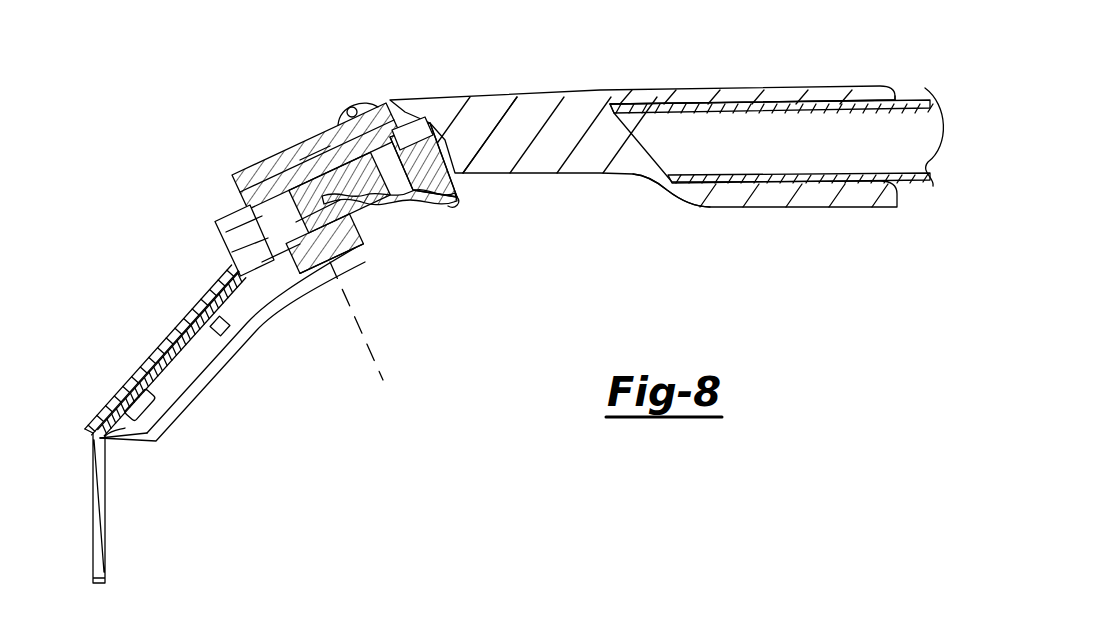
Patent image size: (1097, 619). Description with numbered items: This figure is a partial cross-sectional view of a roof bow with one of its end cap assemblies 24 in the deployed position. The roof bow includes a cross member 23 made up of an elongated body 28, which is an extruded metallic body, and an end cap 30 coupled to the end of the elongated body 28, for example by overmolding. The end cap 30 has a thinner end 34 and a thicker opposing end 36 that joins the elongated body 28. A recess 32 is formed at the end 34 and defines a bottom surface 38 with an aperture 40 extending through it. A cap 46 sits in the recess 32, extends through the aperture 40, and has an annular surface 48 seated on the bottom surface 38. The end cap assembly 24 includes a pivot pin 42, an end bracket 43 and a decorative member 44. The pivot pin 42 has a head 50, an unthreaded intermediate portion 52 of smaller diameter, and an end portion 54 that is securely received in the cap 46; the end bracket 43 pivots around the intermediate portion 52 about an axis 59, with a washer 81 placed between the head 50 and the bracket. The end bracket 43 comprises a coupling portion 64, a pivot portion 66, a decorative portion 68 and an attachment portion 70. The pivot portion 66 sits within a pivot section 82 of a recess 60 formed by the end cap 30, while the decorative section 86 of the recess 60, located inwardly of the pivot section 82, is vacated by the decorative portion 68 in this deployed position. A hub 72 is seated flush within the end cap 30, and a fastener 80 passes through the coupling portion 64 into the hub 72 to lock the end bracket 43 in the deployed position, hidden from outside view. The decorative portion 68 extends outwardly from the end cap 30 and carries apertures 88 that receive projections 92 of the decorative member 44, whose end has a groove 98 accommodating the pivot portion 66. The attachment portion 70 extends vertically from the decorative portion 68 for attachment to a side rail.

The cross member 23 is at (802, 75).
The end cap assembly 24 is at (255, 350).
The elongated body 28 is at (900, 183).
The end cap 30 is at (652, 88).
The recess 32 is at (352, 118).
The end 34 is at (220, 203).
The end 36 is at (858, 86).
The bottom surface 38 is at (253, 160).
The aperture 40 is at (282, 195).
The pivot pin 42 is at (367, 247).
The end bracket 43 is at (168, 372).
The decorative member 44 is at (173, 327).
The cap 46 is at (318, 160).
The annular surface 48 is at (394, 125).
The head 50 is at (345, 252).
The intermediate portion 52 is at (336, 215).
The end portion 54 is at (305, 245).
The axis 59 is at (383, 385).
The recess 60 is at (531, 188).
The coupling portion 64 is at (470, 160).
The pivot portion 66 is at (388, 228).
The decorative portion 68 is at (153, 358).
The attachment portion 70 is at (110, 553).
The hub 72 is at (428, 125).
The fastener 80 is at (452, 200).
The washer 81 is at (277, 266).
The pivot section 82 is at (240, 240).
The decorative section 86 is at (592, 174).
The apertures 88 is at (125, 430).
The projections 92 is at (125, 397).
The groove 98 is at (235, 266).